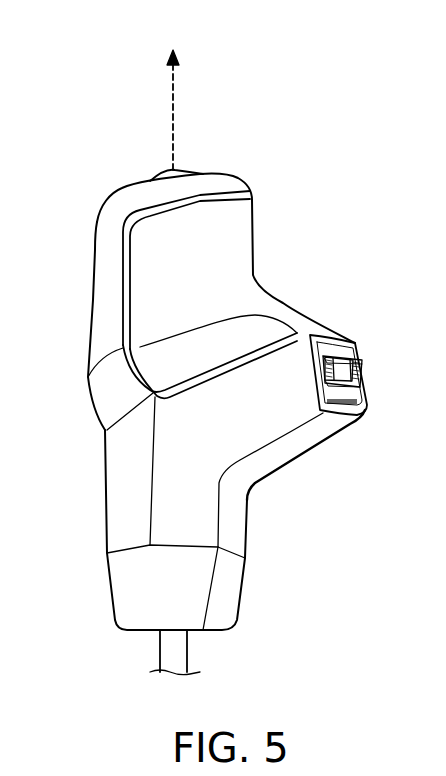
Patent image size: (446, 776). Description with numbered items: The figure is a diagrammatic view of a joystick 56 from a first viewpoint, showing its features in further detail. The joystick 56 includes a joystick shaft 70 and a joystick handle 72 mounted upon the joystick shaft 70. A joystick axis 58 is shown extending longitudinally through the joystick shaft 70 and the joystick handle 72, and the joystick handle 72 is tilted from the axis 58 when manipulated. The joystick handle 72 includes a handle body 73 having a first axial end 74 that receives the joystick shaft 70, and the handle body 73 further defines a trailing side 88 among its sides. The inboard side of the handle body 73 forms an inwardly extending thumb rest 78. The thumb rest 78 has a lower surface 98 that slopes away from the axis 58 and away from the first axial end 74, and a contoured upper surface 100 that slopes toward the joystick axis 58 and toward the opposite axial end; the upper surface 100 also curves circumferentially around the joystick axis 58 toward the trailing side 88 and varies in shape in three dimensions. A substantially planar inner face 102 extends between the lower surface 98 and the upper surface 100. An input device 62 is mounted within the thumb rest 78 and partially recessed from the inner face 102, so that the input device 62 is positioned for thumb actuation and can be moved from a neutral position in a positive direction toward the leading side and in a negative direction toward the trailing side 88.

The joystick 56 is at (76, 177).
The joystick axis 58 is at (173, 93).
The joystick handle 72 is at (282, 199).
The contoured upper surface 100 is at (279, 270).
The thumb rest 78 is at (285, 355).
The inner face 102 is at (353, 338).
The input device 62 is at (363, 373).
The lower surface 98 is at (313, 465).
The trailing side 88 is at (142, 455).
The handle body 73 is at (248, 518).
The joystick shaft 70 is at (160, 645).
The first axial end 74 is at (210, 635).